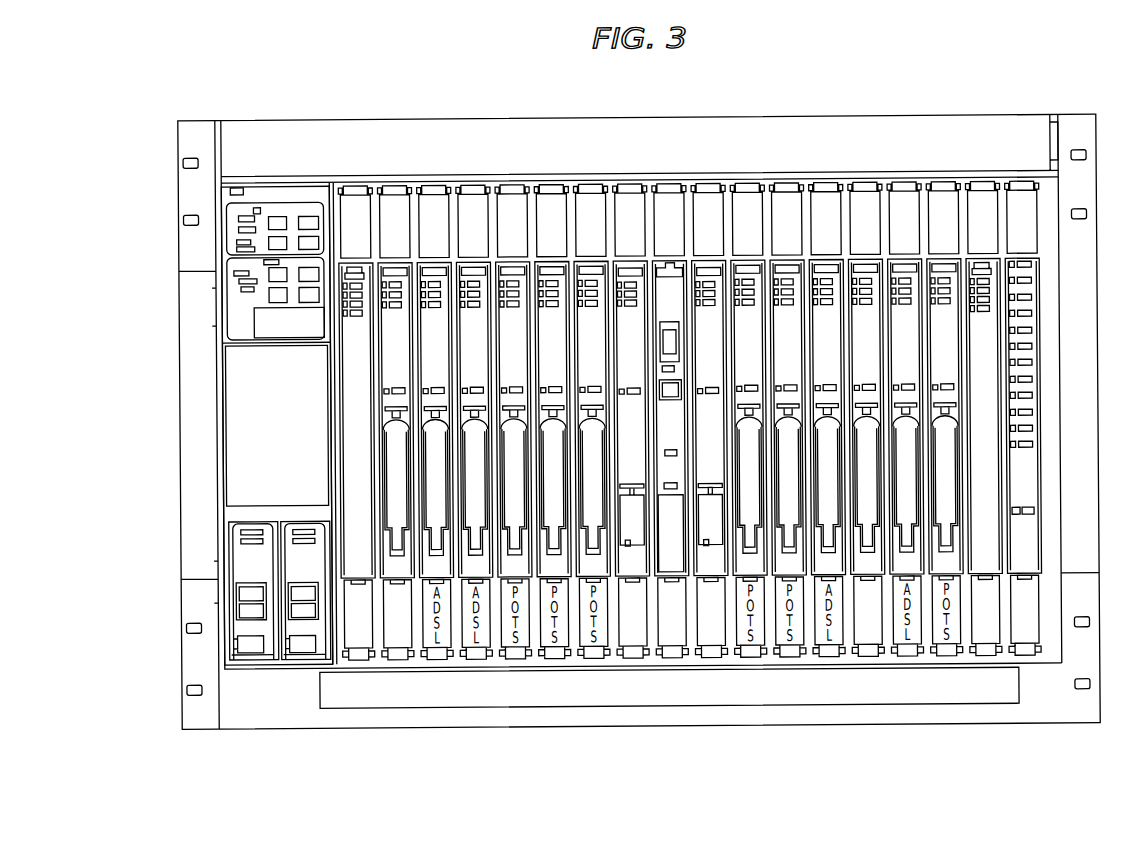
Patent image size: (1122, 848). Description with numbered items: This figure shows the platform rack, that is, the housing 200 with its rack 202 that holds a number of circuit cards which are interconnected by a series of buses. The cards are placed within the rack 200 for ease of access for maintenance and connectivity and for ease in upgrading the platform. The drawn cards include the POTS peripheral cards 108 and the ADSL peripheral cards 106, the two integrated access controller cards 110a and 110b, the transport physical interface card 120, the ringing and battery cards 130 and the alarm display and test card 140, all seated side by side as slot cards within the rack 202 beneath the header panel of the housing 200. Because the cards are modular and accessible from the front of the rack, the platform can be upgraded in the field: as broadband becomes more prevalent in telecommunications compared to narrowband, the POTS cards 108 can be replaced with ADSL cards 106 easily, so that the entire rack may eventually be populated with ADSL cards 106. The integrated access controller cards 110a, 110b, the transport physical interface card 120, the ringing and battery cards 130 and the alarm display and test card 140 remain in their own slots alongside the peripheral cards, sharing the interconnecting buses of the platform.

The housing 200 is at (196, 104).
The rack 202 is at (808, 116).
The transport physical interface (TPI) card 120 is at (360, 658).
The POTS peripheral card 108 is at (398, 658).
The integrated access controller (IAC) card 110a is at (626, 658).
The integrated access controller (IAC) card 110b is at (706, 658).
The ADSL peripheral card 106 is at (868, 656).
The ringing and battery (RBT) card 130 is at (985, 656).
The alarm display and test (ADT) card 140 is at (1025, 656).